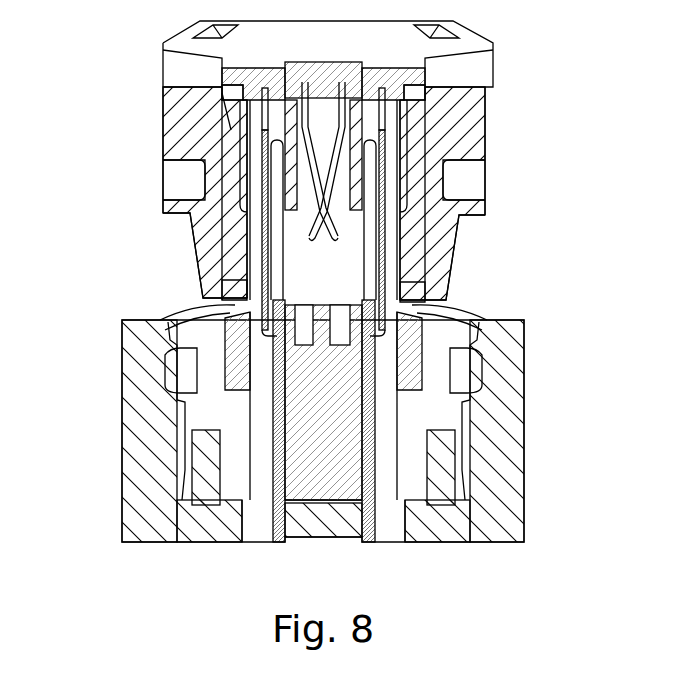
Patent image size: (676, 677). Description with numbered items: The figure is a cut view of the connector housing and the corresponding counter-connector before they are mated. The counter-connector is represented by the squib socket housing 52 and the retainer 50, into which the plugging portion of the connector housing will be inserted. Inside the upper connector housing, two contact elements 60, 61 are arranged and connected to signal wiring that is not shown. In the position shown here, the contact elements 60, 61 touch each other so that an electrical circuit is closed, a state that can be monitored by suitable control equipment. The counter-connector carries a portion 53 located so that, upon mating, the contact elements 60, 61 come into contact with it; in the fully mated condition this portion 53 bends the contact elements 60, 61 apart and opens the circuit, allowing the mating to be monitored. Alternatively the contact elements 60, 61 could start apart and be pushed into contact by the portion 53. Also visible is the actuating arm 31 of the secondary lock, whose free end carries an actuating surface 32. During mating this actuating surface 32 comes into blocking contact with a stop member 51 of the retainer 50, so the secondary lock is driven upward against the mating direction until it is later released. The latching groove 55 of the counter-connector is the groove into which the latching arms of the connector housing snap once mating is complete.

The actuating arm 31 is at (207, 218).
The actuating surface 32 is at (237, 318).
The retainer 50 is at (202, 492).
The stop member 51 is at (233, 306).
The squib socket housing 52 is at (148, 347).
The portion 53 is at (340, 305).
The latching groove 55 is at (177, 398).
The contact element 60 is at (323, 134).
The contact element 61 is at (323, 134).